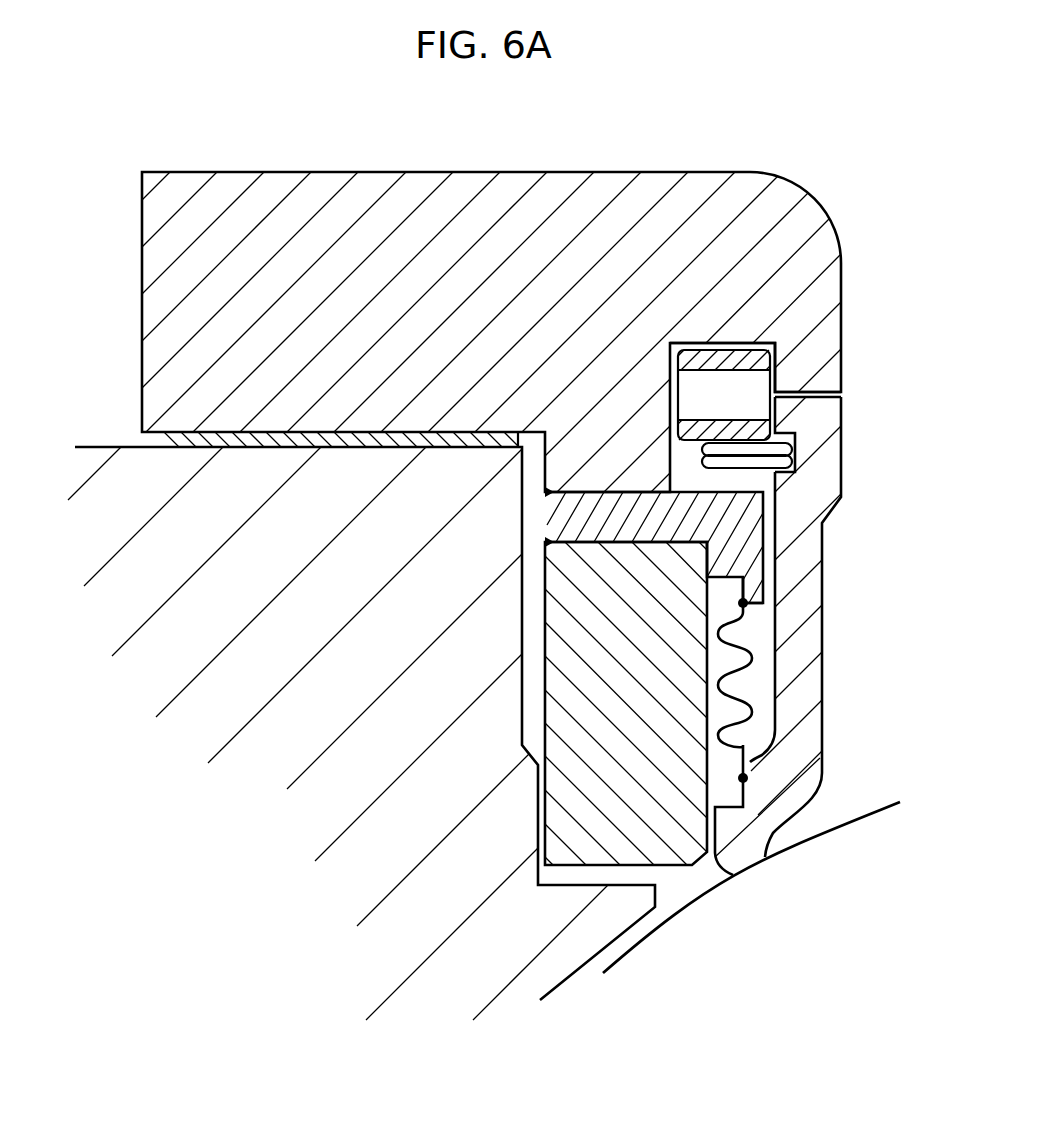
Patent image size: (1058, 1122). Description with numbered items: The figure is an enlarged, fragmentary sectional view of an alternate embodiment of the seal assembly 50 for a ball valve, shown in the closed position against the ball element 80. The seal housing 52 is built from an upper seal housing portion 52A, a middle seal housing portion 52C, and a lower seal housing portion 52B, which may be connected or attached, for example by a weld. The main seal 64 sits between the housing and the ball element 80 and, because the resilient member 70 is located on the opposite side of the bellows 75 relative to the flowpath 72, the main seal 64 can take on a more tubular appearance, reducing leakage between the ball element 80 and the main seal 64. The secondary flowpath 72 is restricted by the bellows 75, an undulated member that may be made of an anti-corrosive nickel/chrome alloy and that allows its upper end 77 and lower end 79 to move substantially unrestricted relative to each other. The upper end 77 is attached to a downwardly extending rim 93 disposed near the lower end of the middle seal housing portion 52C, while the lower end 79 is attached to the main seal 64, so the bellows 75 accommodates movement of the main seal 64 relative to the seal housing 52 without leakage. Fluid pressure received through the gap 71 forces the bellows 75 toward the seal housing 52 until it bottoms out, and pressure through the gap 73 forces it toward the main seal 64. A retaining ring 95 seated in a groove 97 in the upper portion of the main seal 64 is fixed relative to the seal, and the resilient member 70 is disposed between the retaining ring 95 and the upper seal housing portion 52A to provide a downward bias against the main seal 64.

The seal assembly 50 is at (752, 150).
The seal housing 52 is at (530, 172).
The upper seal housing portion 52A is at (440, 319).
The lower seal housing portion 52B is at (648, 702).
The middle seal housing portion 52C is at (632, 529).
The main seal 64 is at (808, 730).
The resilient member 70 is at (741, 343).
The gap 71 is at (818, 390).
The secondary flowpath 72 is at (845, 393).
The gap 73 is at (712, 852).
The bellows 75 is at (753, 671).
The upper end of the bellows 77 is at (745, 606).
The lower end of the bellows 79 is at (745, 778).
The ball element 80 is at (820, 906).
The downwardly extending rim 93 is at (745, 602).
The retaining ring 95 is at (793, 433).
The groove 97 is at (793, 458).